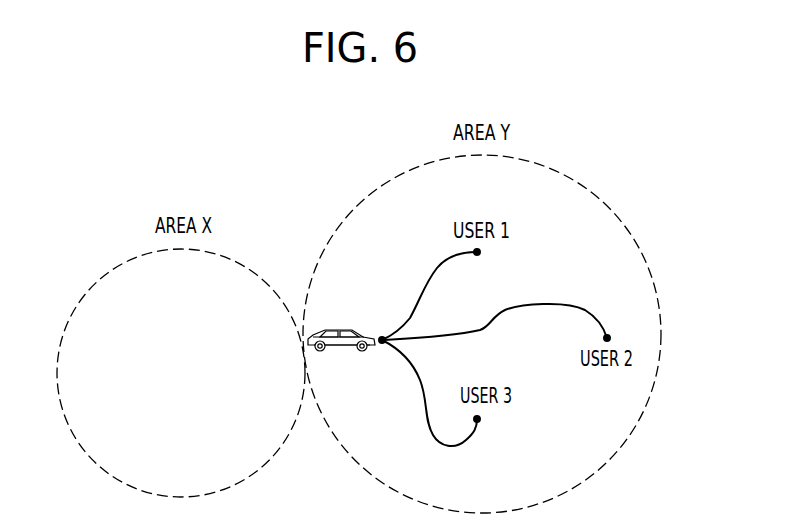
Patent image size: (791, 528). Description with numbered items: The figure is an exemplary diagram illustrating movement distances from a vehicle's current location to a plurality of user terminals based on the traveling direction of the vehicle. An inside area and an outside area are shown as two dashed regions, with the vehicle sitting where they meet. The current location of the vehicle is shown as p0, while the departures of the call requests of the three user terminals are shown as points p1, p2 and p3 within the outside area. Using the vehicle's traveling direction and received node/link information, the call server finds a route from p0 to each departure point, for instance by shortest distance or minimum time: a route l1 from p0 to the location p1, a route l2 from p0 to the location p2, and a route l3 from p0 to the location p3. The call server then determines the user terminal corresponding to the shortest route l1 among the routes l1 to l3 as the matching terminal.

The current location of the vehicle p0 is at (383, 353).
The departure of the call request of the first user terminal p1 is at (488, 257).
The departure of the call request of the second user terminal p2 is at (619, 328).
The departure of the call request of the third user terminal p3 is at (489, 422).
The route l1 is at (433, 272).
The route l2 is at (493, 312).
The route l3 is at (457, 448).